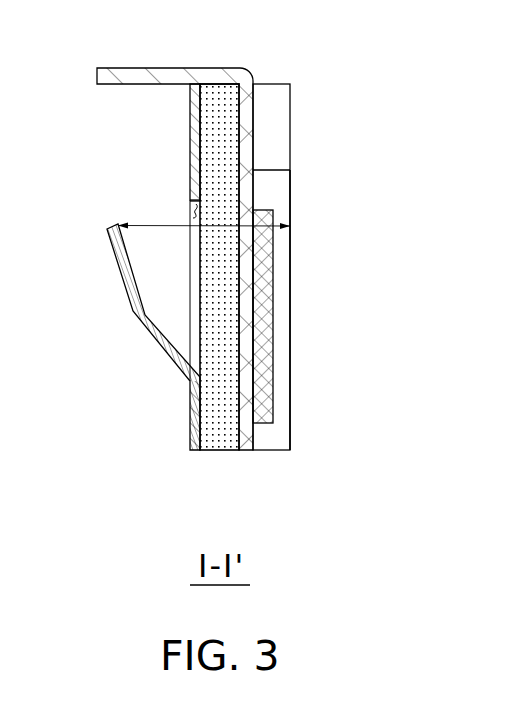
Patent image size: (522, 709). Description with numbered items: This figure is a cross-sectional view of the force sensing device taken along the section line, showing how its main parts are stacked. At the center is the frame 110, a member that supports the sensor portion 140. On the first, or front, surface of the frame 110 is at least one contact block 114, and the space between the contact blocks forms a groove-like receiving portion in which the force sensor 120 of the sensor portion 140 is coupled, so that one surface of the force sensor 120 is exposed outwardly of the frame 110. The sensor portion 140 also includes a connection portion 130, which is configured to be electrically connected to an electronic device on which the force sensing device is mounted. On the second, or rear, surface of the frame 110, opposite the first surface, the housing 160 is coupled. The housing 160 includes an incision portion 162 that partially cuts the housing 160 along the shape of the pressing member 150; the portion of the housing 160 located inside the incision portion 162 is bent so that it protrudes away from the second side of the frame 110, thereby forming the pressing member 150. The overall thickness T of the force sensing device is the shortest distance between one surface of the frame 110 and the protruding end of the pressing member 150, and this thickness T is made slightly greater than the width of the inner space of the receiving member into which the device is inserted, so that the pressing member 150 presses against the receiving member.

The frame 110 is at (220, 437).
The contact block 114 is at (280, 372).
The force sensor 120 is at (263, 248).
The connection portion 130 is at (158, 76).
The sensor portion 140 is at (380, 12).
The pressing member 150 is at (158, 347).
The housing 160 is at (193, 145).
The incision portion 162 is at (190, 217).
The thickness of the force sensing device T is at (220, 227).